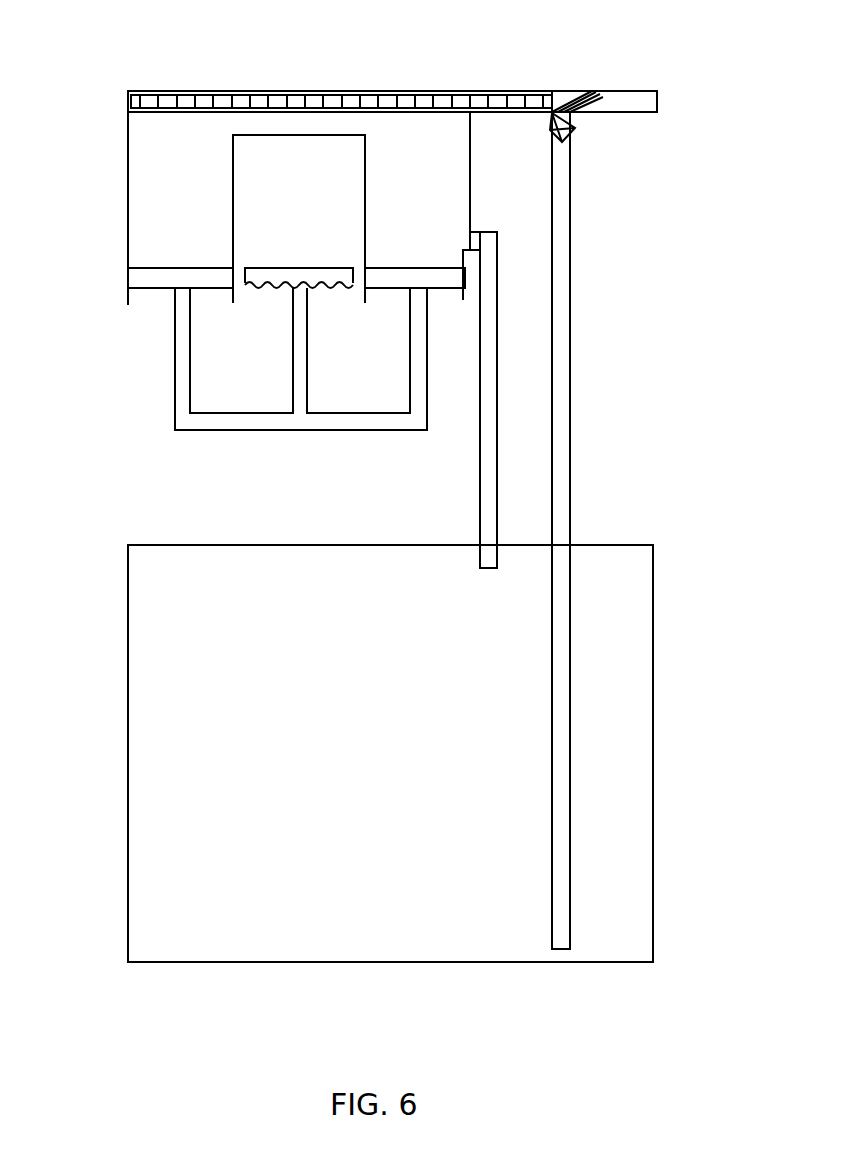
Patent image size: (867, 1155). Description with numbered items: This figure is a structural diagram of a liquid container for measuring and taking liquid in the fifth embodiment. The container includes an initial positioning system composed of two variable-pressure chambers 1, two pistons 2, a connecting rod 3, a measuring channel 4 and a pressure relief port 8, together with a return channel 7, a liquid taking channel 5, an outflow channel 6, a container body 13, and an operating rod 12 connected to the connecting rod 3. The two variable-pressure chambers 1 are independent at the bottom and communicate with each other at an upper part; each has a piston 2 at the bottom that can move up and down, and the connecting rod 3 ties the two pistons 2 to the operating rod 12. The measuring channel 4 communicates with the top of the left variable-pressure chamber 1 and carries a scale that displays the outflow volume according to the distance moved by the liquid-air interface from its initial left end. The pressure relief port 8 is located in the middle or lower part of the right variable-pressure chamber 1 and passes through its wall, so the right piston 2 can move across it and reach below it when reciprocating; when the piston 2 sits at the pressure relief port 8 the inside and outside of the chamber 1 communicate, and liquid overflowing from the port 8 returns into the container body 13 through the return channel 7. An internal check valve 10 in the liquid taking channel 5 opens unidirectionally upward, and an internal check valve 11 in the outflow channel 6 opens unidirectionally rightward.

The variable-pressure chamber 1 is at (180, 172).
The piston 2 is at (172, 280).
The connecting rod 3 is at (300, 423).
The measuring channel 4 is at (392, 96).
The liquid taking channel 5 is at (572, 328).
The outflow channel 6 is at (647, 92).
The return channel 7 is at (488, 452).
The pressure relief port 8 is at (462, 292).
The internal check valve 10 is at (562, 122).
The internal check valve 11 is at (593, 91).
The operating rod 12 is at (299, 268).
The container body 13 is at (368, 618).